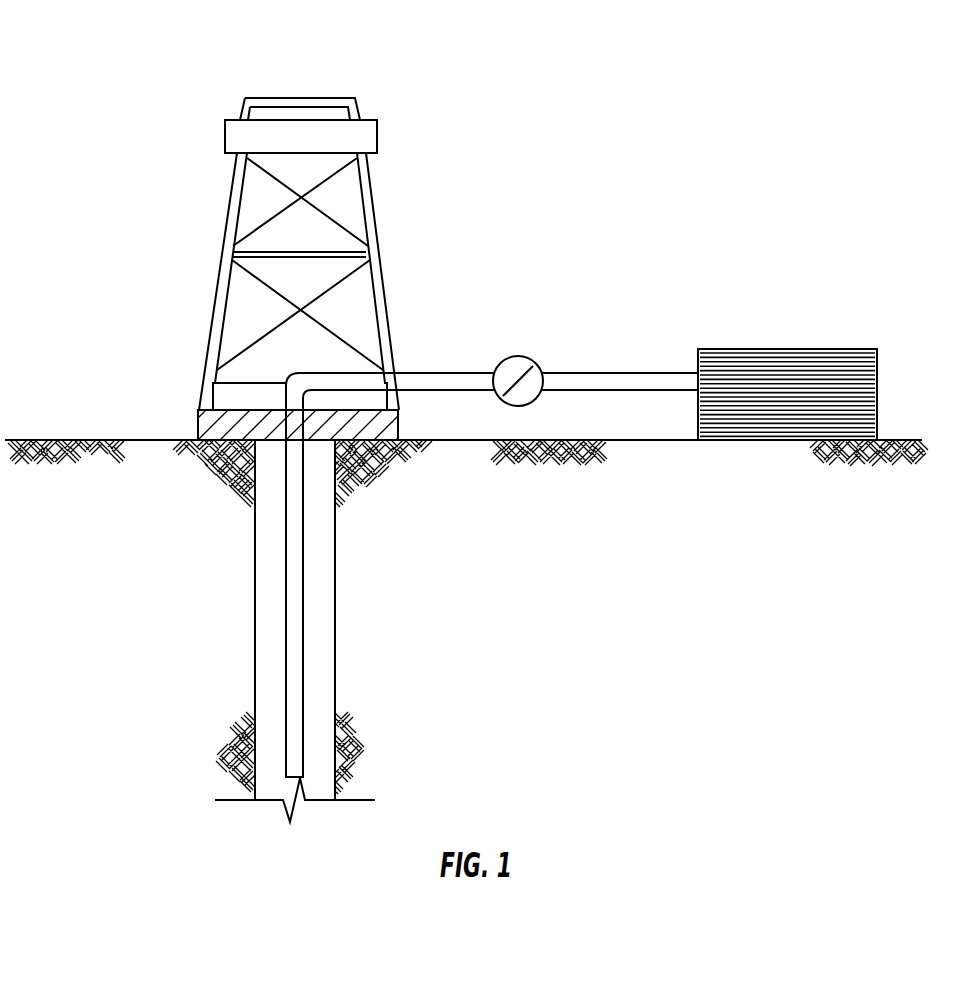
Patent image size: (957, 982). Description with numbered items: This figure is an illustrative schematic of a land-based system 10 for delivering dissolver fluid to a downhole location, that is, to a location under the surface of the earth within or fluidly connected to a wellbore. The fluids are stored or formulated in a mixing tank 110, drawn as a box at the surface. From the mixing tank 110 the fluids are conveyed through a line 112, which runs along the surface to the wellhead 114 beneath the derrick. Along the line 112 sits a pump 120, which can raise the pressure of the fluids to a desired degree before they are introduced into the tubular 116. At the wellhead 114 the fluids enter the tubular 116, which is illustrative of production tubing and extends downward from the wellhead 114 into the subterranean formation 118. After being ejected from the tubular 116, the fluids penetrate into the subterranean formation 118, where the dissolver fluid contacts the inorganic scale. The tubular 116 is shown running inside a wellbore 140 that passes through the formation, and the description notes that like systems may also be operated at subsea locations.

The system 10 is at (116, 62).
The mixing tank 110 is at (827, 349).
The line 112 is at (425, 373).
The wellhead 114 is at (198, 424).
The tubular 116 is at (303, 587).
The subterranean formation 118 is at (112, 658).
The pump 120 is at (520, 356).
The wellbore 140 is at (258, 577).